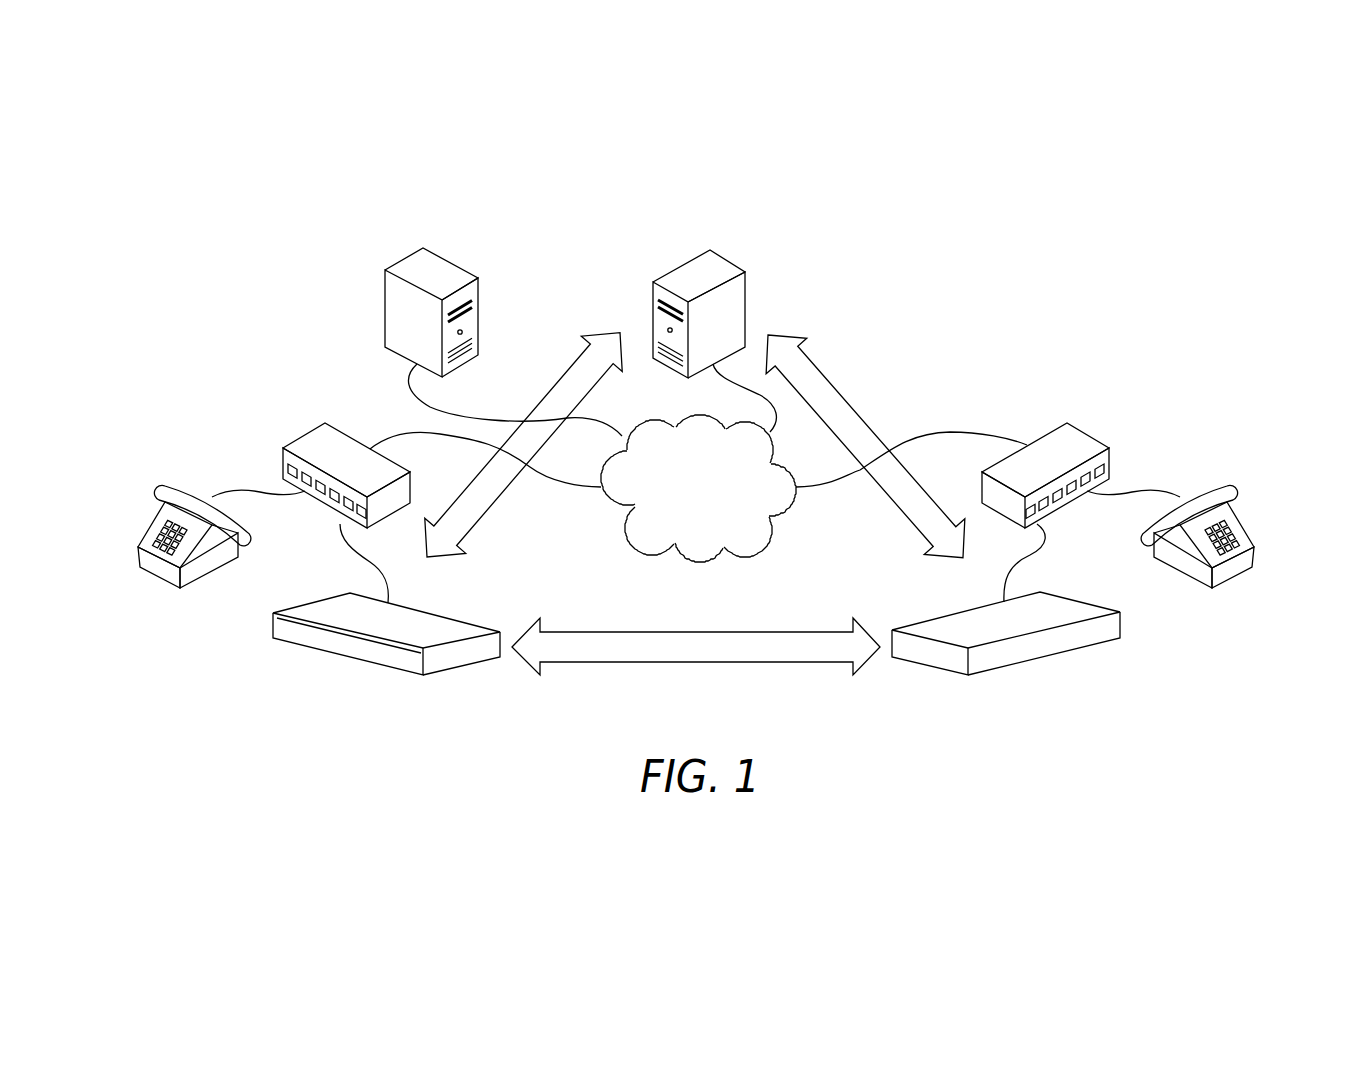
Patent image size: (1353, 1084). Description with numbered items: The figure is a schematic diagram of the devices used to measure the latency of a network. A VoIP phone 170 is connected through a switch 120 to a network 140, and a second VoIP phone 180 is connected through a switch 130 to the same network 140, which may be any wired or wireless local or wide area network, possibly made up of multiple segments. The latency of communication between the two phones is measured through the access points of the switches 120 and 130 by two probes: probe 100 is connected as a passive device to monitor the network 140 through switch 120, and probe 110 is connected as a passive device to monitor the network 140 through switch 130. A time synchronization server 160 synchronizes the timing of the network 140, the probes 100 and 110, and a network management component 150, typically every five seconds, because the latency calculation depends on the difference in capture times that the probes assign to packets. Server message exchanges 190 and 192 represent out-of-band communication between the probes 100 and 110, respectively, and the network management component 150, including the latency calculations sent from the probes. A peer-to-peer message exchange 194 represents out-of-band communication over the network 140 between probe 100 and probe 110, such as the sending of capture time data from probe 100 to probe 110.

The probe 100 is at (427, 610).
The probe 110 is at (968, 610).
The switch 120 is at (302, 435).
The switch 130 is at (1088, 433).
The network 140 is at (760, 547).
The network management component 150 is at (747, 305).
The time synchronization server 160 is at (385, 308).
The VoIP phone 170 is at (152, 525).
The VoIP phone 180 is at (1242, 523).
The server message exchange 190 is at (567, 372).
The server message exchange 192 is at (842, 392).
The peer-to-peer message exchange 194 is at (697, 632).